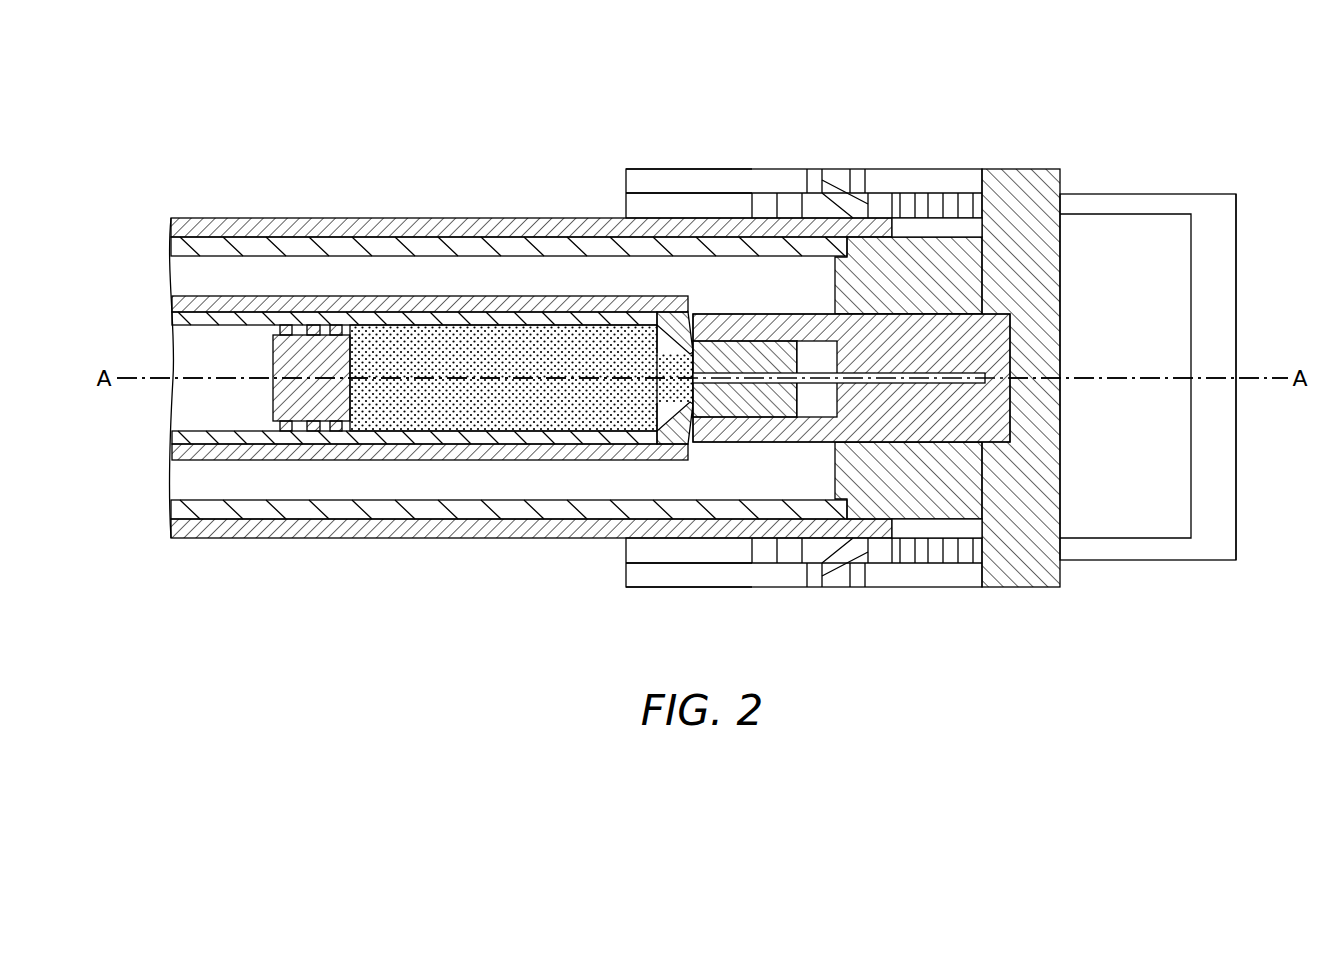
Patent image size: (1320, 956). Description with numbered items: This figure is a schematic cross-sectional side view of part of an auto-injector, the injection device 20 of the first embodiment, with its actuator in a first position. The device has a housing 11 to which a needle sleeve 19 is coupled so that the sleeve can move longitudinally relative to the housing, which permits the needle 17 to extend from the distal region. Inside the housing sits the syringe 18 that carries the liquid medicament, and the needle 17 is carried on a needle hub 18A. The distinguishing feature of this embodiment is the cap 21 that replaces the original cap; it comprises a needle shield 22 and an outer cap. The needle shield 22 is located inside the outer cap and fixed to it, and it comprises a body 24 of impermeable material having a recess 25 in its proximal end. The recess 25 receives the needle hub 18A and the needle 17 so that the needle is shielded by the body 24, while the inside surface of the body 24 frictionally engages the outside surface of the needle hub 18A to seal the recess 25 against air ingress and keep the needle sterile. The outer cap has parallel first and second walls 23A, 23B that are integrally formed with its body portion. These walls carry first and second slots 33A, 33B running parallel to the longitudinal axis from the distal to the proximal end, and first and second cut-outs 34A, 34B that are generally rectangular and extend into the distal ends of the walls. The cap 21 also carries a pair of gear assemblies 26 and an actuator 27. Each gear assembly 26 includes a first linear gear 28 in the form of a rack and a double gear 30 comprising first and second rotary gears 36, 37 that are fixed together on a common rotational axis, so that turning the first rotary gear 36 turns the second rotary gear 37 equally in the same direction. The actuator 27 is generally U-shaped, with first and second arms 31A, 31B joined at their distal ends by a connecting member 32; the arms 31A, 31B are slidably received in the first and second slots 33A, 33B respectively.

The injection device 20 is at (264, 128).
The cap 21 is at (1192, 85).
The housing 11 is at (395, 227).
The needle sleeve 19 is at (524, 237).
The syringe 18 is at (408, 444).
The needle hub 18A is at (741, 443).
The needle 17 is at (813, 385).
The body 24 is at (738, 314).
The recess 25 is at (812, 360).
The needle shield 22 is at (1010, 414).
The gear assembly 26 is at (795, 135).
The second slot 33B is at (648, 178).
The first slot 33A is at (658, 584).
The second wall 23B is at (700, 178).
The first wall 23A is at (727, 584).
The double gear 30 is at (845, 170).
The first rotary gear 36 is at (790, 178).
The second rotary gear 37 is at (830, 178).
The second cut-out 34B is at (934, 178).
The first cut-out 34A is at (898, 584).
The first linear gear 28 is at (965, 178).
The actuator 27 is at (1213, 196).
The second arm 31B is at (1110, 196).
The first arm 31A is at (1146, 553).
The connecting member 32 is at (1238, 496).